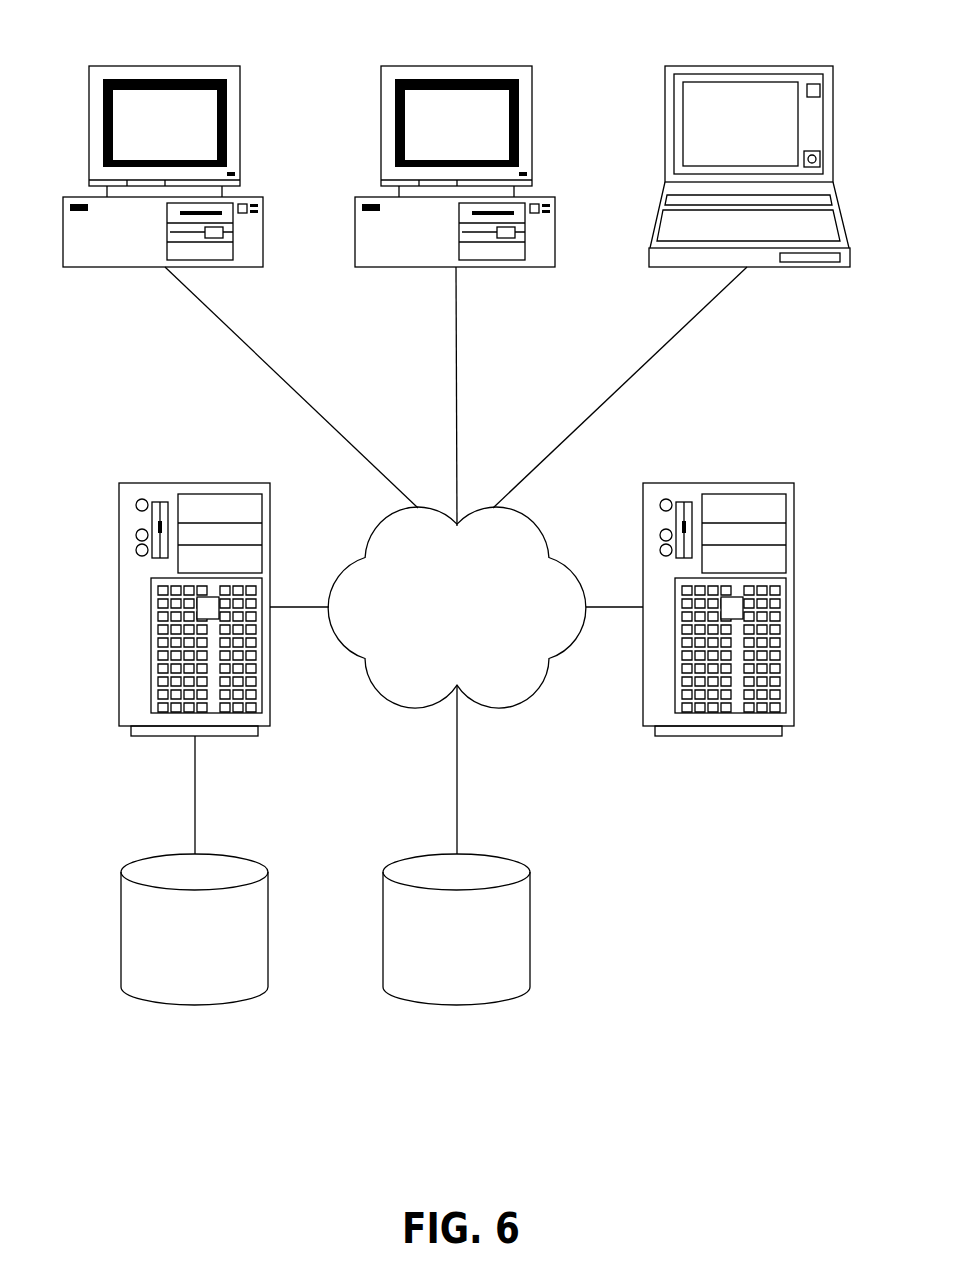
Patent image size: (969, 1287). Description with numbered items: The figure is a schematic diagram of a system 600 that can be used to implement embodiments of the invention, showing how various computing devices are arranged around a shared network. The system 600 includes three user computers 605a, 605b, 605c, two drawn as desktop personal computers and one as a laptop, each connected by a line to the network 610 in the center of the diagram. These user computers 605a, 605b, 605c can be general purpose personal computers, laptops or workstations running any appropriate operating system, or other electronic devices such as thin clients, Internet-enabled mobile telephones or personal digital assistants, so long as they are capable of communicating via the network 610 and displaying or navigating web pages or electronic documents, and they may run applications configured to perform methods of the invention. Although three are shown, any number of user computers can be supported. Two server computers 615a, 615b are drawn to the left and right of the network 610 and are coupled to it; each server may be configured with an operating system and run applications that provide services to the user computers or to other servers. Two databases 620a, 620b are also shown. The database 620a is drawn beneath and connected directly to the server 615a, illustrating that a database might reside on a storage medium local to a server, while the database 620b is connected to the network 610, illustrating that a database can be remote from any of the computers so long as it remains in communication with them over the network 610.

The system 600 is at (712, 1072).
The user computer 605a is at (263, 217).
The user computer 605b is at (355, 217).
The user computer 605c is at (665, 167).
The network 610 is at (493, 708).
The server computer 615a is at (119, 607).
The server computer 615b is at (794, 607).
The database 620a is at (195, 1005).
The database 620b is at (457, 1005).